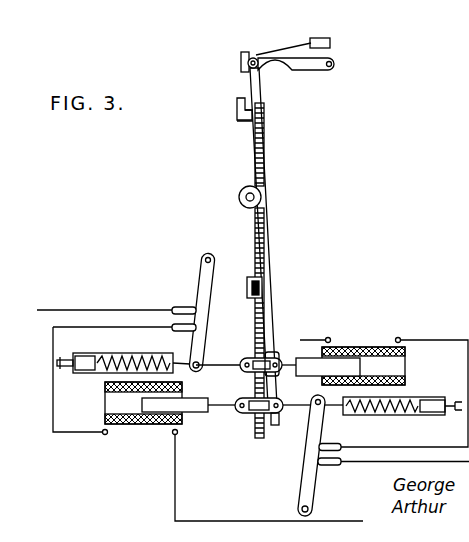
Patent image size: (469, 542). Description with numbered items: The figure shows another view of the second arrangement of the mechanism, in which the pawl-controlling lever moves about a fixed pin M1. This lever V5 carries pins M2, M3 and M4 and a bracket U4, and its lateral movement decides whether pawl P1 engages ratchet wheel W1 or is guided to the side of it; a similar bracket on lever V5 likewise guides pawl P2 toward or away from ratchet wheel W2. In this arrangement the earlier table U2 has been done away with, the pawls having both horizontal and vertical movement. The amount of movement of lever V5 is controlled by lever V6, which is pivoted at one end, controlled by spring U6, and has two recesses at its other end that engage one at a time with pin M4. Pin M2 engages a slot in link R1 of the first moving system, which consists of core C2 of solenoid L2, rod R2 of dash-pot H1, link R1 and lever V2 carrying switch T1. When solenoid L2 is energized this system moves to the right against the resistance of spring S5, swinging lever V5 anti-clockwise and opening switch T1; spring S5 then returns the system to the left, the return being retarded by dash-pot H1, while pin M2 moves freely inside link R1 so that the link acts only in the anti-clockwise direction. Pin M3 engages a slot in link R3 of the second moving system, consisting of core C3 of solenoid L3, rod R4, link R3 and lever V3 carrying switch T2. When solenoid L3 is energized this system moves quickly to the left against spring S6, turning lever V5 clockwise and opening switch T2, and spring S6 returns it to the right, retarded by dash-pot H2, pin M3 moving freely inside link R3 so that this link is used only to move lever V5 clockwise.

The lever V6 is at (244, 52).
The spring U6 is at (296, 46).
The pin M4 is at (258, 68).
The pawl P1 is at (238, 98).
The bracket U4 is at (250, 121).
The ratchet wheel W1 is at (265, 112).
The fixed pin M1 is at (239, 197).
The pawl P2 is at (250, 278).
The lever V5 is at (270, 268).
The switch T1 is at (190, 310).
The table U2 is at (219, 270).
The lever V2 is at (209, 320).
The ratchet wheel W2 is at (259, 333).
The core C2 is at (315, 365).
The solenoid L2 is at (376, 347).
The dash-pot H1 is at (90, 368).
The spring S5 is at (123, 362).
The link R1 is at (250, 361).
The rod R2 is at (216, 378).
The pin M2 is at (277, 371).
The rod R4 is at (275, 406).
The link R3 is at (238, 416).
The pin M3 is at (276, 426).
The core C3 is at (193, 413).
The solenoid L3 is at (141, 421).
The lever V3 is at (301, 473).
The switch T2 is at (330, 466).
The spring S6 is at (366, 408).
The dash-pot H2 is at (416, 412).